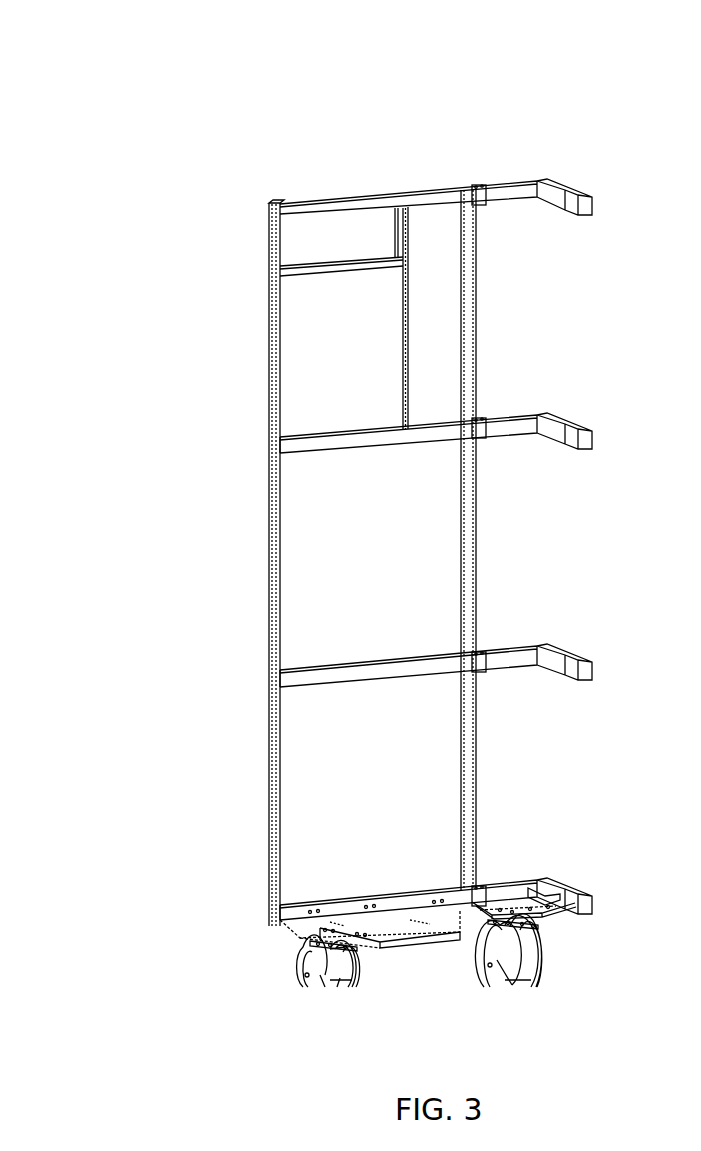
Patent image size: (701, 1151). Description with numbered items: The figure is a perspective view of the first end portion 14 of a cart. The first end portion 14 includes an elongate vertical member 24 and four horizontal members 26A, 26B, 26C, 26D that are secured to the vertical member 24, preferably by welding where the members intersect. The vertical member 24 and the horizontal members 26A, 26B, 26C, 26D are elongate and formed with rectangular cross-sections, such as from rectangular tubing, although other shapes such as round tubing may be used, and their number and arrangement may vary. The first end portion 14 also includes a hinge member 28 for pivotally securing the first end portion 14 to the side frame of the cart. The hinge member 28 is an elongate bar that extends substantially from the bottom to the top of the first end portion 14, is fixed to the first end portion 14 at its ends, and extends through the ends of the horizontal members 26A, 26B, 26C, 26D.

The first end portion 14 is at (172, 152).
The elongate vertical member 24 is at (268, 549).
The horizontal member 26A is at (379, 190).
The horizontal member 26B is at (367, 433).
The horizontal member 26C is at (377, 660).
The horizontal member 26D is at (403, 890).
The hinge member 28 is at (479, 323).